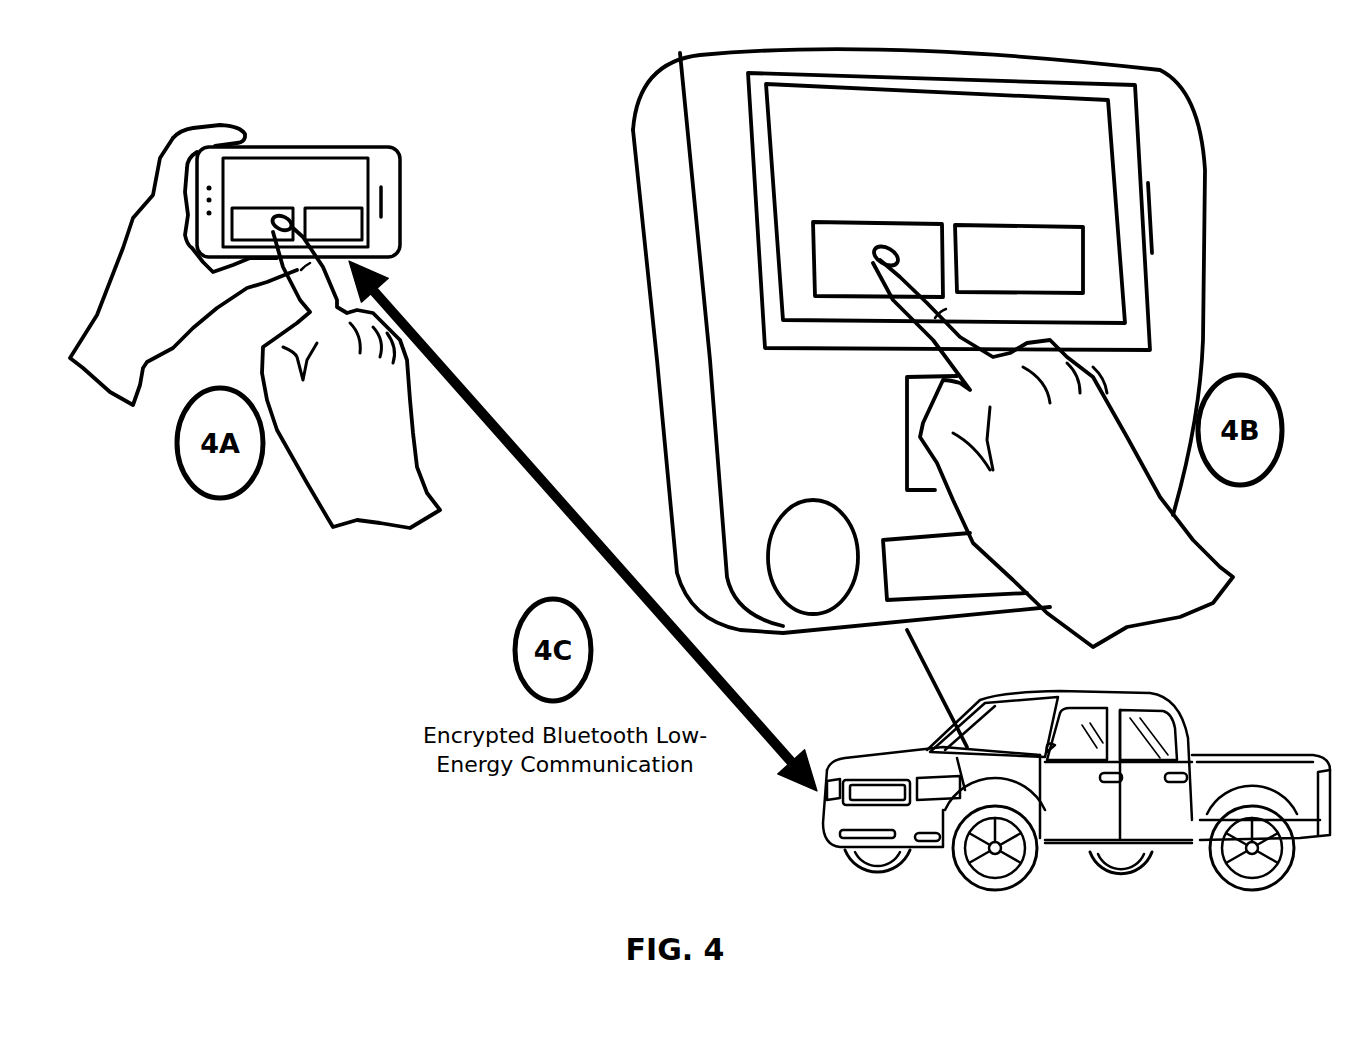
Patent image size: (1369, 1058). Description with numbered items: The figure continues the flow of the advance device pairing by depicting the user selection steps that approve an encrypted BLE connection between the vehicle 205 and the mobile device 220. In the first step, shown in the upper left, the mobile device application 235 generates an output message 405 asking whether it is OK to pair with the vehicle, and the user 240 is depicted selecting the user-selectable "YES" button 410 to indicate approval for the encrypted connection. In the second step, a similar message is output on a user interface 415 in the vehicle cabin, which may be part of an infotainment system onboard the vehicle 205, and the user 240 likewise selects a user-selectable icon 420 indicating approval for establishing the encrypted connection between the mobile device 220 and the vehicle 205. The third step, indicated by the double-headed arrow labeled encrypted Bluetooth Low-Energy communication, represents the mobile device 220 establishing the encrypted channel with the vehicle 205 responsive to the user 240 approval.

The vehicle 205 is at (1167, 700).
The mobile device 220 is at (297, 147).
The mobile device application 235 is at (233, 176).
The user 240 is at (313, 470).
The output message 405 is at (233, 180).
The YES button 410 is at (231, 227).
The user interface 415 is at (633, 143).
The user-selectable icon 420 is at (813, 257).